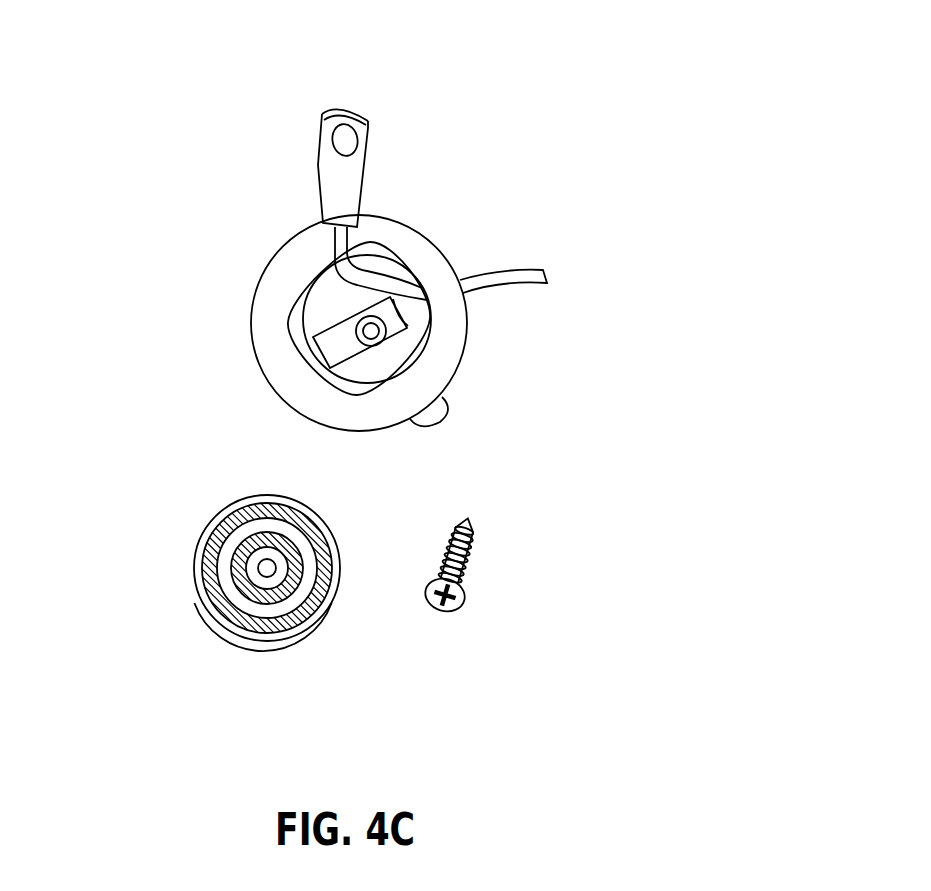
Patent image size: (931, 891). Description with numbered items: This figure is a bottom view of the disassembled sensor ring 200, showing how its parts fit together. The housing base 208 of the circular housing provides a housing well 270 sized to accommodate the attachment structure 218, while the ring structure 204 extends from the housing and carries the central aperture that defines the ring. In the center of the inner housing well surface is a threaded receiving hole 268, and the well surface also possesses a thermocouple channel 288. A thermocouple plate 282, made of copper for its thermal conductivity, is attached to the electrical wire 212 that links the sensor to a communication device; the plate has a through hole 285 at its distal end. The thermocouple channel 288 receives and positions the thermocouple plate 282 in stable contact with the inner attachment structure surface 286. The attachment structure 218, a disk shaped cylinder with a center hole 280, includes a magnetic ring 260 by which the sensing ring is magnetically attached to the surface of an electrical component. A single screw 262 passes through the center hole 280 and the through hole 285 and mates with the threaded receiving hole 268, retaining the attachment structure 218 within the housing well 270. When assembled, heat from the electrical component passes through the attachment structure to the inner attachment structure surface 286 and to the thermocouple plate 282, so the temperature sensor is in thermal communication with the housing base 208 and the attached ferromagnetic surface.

The sensor ring 200 is at (302, 230).
The through hole 285 is at (323, 127).
The thermocouple plate 282 is at (363, 173).
The housing base 208 is at (417, 246).
The housing well 270 is at (335, 311).
The thermocouple channel 288 is at (322, 354).
The electrical wire 212 is at (510, 288).
The threaded receiving hole 268 is at (373, 334).
The ring structure 204 is at (448, 407).
The magnetic ring 260 is at (210, 563).
The attachment structure 218 is at (207, 617).
The screw 262 is at (472, 562).
The inner attachment structure surface 286 is at (258, 648).
The center hole 280 is at (269, 577).